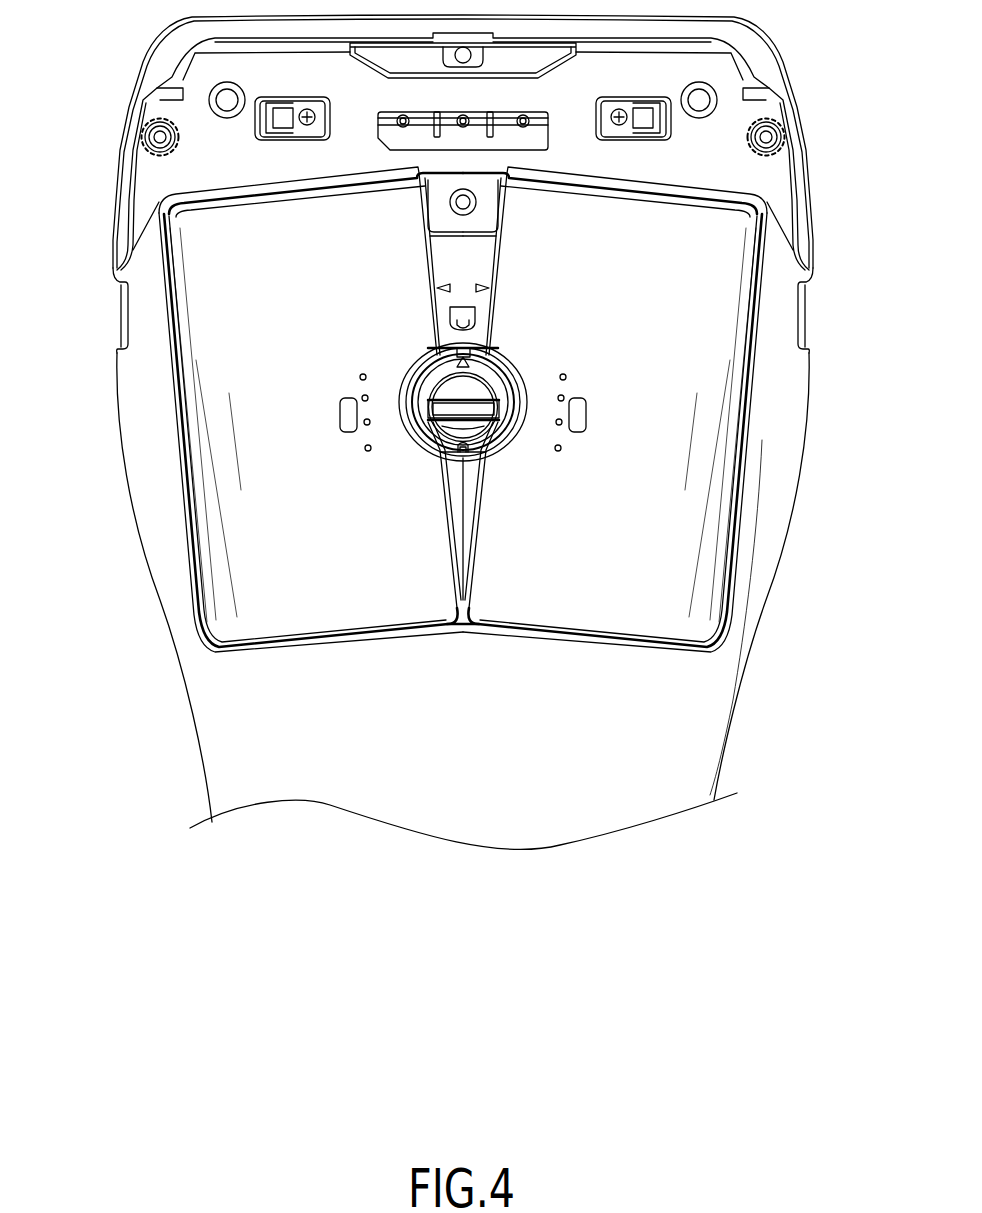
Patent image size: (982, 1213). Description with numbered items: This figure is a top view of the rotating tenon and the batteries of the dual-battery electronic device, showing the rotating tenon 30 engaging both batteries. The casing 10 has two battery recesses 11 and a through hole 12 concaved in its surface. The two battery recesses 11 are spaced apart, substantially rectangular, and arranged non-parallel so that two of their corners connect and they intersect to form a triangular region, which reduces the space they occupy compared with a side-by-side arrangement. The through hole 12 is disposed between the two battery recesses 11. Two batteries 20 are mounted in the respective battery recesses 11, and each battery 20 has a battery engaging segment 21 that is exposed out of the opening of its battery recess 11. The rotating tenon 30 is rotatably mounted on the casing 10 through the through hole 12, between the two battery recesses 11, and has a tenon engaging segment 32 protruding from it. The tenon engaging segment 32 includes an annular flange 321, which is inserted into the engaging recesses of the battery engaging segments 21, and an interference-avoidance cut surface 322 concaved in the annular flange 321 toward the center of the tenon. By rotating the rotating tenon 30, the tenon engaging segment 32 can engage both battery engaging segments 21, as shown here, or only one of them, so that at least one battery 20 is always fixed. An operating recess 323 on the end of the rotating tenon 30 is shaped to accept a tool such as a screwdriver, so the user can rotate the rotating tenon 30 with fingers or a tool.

The casing 10 is at (822, 162).
The battery recesses 11 is at (190, 392).
The through hole 12 is at (428, 453).
The batteries 20 is at (746, 335).
The battery engaging segment 21 is at (513, 387).
The rotating tenon 30 is at (498, 384).
The tenon engaging segment 32 is at (498, 384).
The annular flange 321 is at (463, 350).
The interference-avoidance cut surface 322 is at (489, 424).
The operating recess 323 is at (490, 408).